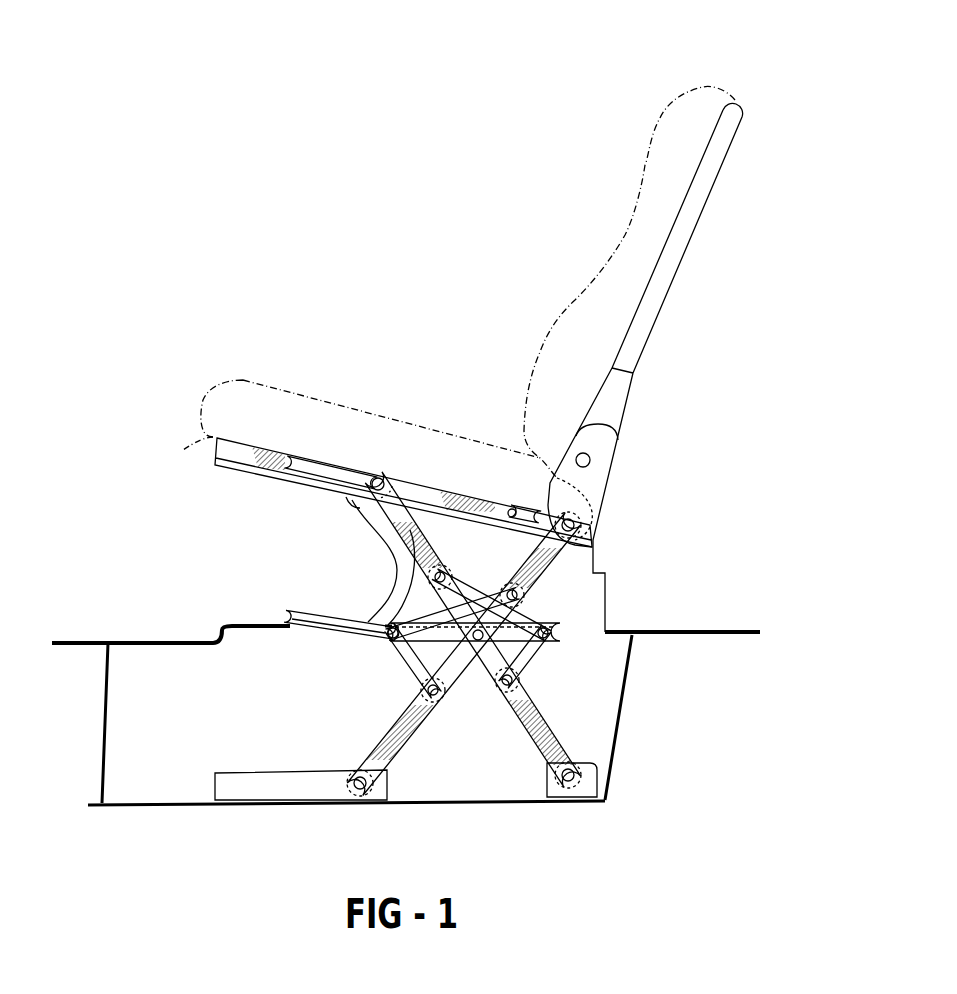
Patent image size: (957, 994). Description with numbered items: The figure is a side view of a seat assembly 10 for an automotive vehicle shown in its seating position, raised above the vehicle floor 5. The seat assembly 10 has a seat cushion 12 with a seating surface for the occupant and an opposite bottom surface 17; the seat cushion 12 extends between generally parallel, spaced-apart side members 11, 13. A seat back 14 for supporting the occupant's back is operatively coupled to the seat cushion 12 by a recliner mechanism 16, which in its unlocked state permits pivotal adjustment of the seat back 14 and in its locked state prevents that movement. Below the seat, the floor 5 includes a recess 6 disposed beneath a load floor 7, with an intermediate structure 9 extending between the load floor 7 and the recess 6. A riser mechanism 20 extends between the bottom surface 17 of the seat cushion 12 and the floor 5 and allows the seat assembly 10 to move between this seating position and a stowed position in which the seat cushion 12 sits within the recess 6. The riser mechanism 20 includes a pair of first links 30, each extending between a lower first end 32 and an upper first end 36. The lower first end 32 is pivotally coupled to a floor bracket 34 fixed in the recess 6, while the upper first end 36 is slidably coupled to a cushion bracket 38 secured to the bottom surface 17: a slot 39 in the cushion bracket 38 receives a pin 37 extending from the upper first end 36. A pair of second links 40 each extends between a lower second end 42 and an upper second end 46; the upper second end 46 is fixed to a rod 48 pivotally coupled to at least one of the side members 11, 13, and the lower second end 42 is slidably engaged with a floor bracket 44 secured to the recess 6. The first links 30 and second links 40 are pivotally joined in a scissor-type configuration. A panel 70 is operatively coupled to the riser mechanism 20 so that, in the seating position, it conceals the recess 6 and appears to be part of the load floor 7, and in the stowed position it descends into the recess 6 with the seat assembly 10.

The seat assembly 10 is at (348, 72).
The seat back 14 is at (728, 152).
The seat cushion 12 is at (217, 386).
The bottom surface 17 is at (186, 456).
The side member 11 is at (403, 443).
The side member 13 is at (252, 451).
The cushion bracket 38 is at (283, 452).
The slot 39 is at (357, 470).
The pin 37 is at (397, 513).
The upper first end 36 is at (408, 497).
The rod 48 is at (548, 507).
The recliner mechanism 16 is at (590, 459).
The upper second end 46 is at (545, 560).
The first link 30 is at (395, 558).
The panel 70 is at (200, 642).
The riser mechanism 20 is at (406, 692).
The load floor 7 is at (713, 629).
The floor 5 is at (750, 637).
The intermediate structure 9 is at (107, 698).
The recess 6 is at (88, 805).
The floor bracket 44 is at (220, 772).
The lower second end 42 is at (370, 763).
The second link 40 is at (388, 730).
The lower first end 32 is at (530, 745).
The floor bracket 34 is at (590, 788).